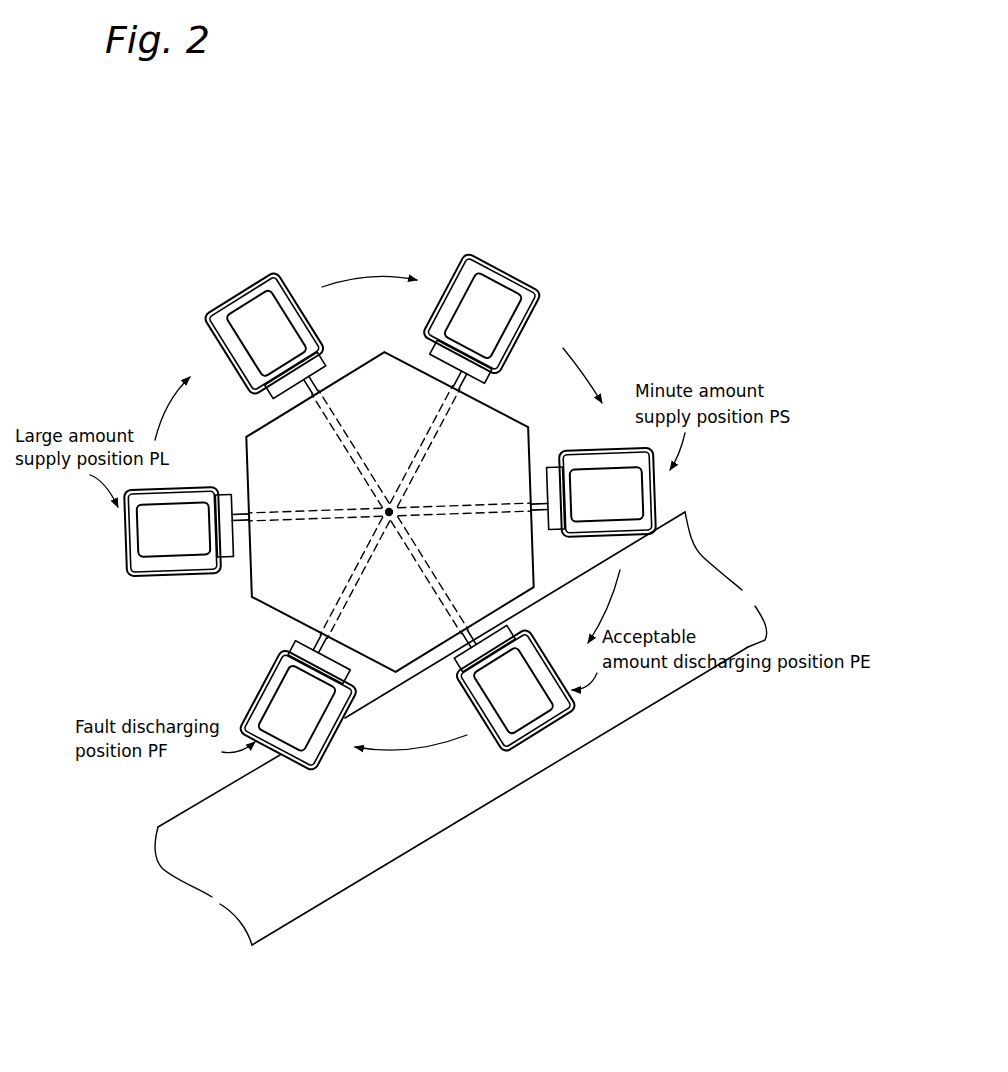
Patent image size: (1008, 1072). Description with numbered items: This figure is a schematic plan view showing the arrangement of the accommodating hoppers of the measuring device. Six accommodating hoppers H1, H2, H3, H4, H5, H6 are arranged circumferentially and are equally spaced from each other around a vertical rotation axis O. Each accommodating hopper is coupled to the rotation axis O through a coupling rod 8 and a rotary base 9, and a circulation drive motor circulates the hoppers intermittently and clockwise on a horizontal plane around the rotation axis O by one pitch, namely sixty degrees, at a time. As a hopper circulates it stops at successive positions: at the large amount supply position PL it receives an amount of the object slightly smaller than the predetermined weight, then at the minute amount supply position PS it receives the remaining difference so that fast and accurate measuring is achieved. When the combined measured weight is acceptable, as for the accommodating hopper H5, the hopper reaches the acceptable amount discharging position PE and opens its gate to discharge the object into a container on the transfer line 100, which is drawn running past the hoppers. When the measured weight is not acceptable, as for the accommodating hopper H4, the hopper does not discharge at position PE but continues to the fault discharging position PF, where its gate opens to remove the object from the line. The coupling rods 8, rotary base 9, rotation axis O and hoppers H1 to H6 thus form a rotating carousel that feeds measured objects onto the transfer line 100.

The rotary base 9 is at (502, 423).
The coupling rod 8 is at (423, 504).
The rotation axis O is at (389, 506).
The accommodating hopper H1 is at (125, 547).
The accommodating hopper H2 is at (245, 295).
The accommodating hopper H3 is at (500, 275).
The accommodating hopper H4 is at (600, 453).
The accommodating hopper H5 is at (493, 735).
The head at fault discharging position PF H6 is at (263, 682).
The transfer line 100 is at (565, 763).